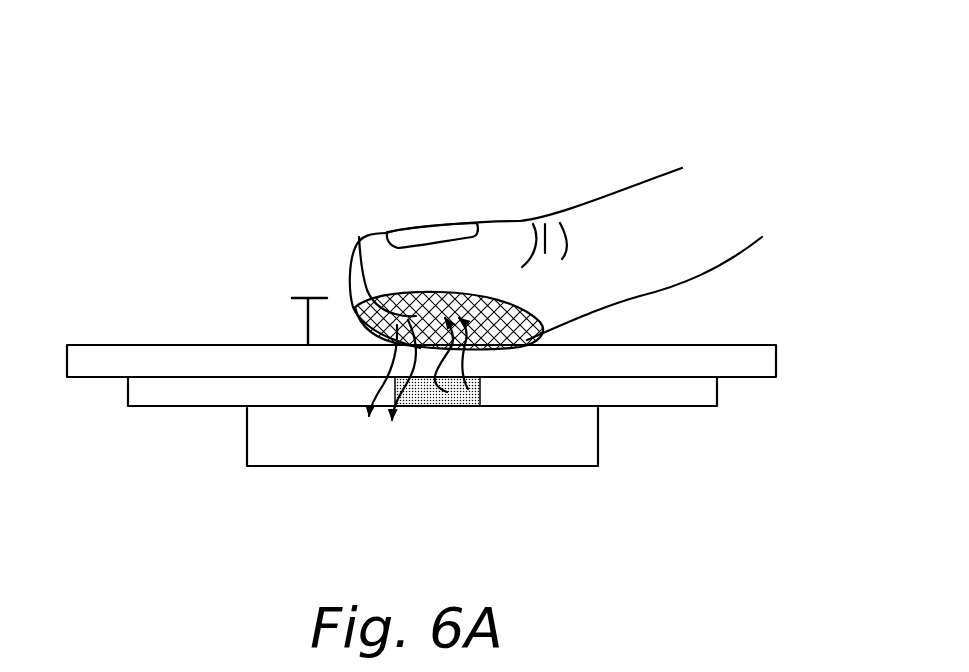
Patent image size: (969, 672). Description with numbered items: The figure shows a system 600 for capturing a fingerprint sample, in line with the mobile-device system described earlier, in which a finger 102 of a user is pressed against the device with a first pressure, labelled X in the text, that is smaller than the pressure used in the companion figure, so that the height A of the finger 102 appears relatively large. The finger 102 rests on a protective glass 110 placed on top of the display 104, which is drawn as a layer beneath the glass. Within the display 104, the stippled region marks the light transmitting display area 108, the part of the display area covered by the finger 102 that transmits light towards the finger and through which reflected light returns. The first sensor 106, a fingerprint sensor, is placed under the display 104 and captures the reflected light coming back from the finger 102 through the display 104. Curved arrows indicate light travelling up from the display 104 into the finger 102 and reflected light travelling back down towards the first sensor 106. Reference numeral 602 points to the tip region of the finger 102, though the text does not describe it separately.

The system for capturing a fingerprint sample 600 is at (70, 127).
The finger 102 is at (640, 222).
The finger tip 602 is at (357, 240).
The protective glass 110 is at (748, 361).
The display 104 is at (152, 391).
The first sensor 106 is at (568, 443).
The light transmitting display area 108 is at (473, 404).